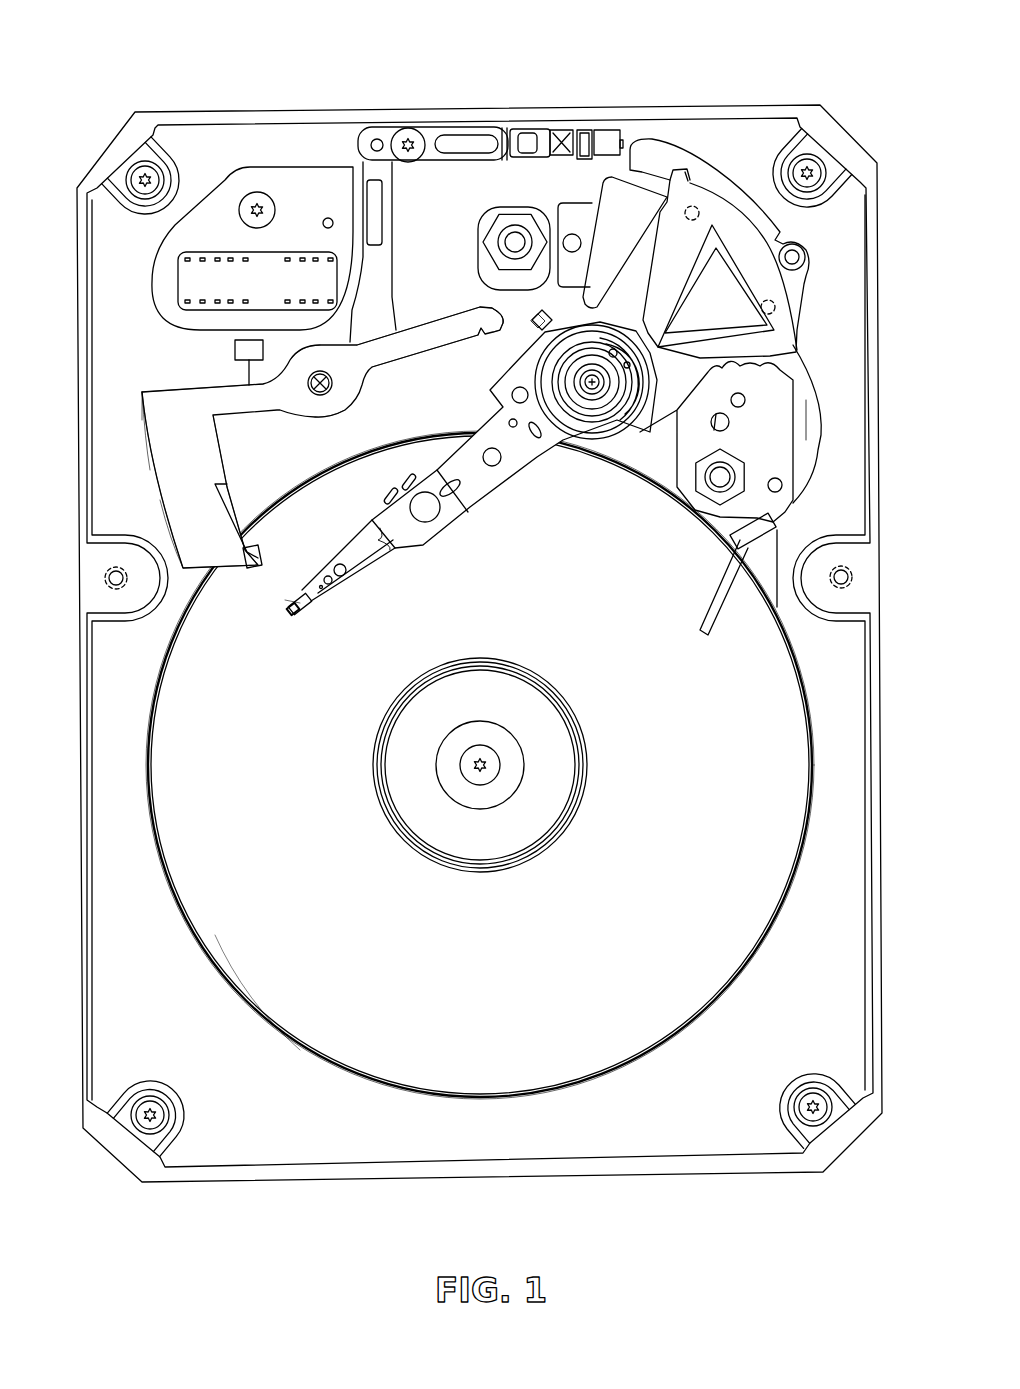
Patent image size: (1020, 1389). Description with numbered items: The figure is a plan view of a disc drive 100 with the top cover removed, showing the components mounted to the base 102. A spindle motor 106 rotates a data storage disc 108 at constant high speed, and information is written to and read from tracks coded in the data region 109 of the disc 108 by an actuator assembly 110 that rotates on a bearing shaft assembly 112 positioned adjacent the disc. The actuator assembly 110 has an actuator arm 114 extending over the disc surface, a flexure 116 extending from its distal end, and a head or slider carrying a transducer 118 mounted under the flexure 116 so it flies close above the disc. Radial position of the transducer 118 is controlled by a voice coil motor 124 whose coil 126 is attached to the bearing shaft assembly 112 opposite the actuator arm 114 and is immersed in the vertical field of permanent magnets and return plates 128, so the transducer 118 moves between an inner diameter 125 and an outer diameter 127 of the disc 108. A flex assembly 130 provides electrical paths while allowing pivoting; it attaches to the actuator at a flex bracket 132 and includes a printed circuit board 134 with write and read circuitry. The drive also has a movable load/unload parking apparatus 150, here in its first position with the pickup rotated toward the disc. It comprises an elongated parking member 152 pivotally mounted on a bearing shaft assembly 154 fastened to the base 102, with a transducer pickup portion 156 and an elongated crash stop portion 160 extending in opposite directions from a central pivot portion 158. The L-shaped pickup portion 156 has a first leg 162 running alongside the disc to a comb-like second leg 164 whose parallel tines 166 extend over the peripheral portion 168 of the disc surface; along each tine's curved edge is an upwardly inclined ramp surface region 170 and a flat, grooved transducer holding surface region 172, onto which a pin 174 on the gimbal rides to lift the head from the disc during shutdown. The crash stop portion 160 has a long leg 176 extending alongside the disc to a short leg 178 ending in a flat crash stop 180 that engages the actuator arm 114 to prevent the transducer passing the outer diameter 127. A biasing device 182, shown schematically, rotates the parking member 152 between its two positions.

The disc drive 100 is at (728, 86).
The base 102 is at (571, 105).
The spindle motor 106 is at (533, 828).
The data storage disc 108 is at (714, 1004).
The data region 109 is at (760, 737).
The actuator assembly 110 is at (448, 464).
The bearing shaft assembly 112 is at (601, 421).
The actuator arm 114 is at (470, 508).
The flexure 116 is at (363, 578).
The transducer 118 is at (310, 615).
The voice coil motor 124 is at (724, 387).
The inner diameter 125 is at (586, 792).
The coil 126 is at (781, 331).
The outer diameter 127 is at (787, 897).
The permanent magnets and return plates 128 is at (617, 213).
The flex assembly 130 is at (396, 291).
The flex bracket 132 is at (545, 317).
The printed circuit board 134 is at (353, 222).
The movable load/unload parking apparatus 150 is at (138, 465).
The elongated parking member 152 is at (164, 386).
The bearing shaft assembly 154 is at (325, 375).
The transducer pickup portion 156 is at (141, 389).
The central pivot portion 158 is at (352, 410).
The crash stop portion 160 is at (441, 308).
The first leg 162 is at (258, 405).
The second leg 164 is at (153, 420).
The tine 166 is at (182, 535).
The peripheral portion 168 is at (215, 935).
The ramp surface region 170 is at (256, 555).
The transducer holding surface region 172 is at (231, 503).
The pin 174 is at (300, 605).
The long leg 176 is at (418, 343).
The short leg 178 is at (482, 330).
The crash stop 180 is at (498, 335).
The biasing device 182 is at (235, 352).